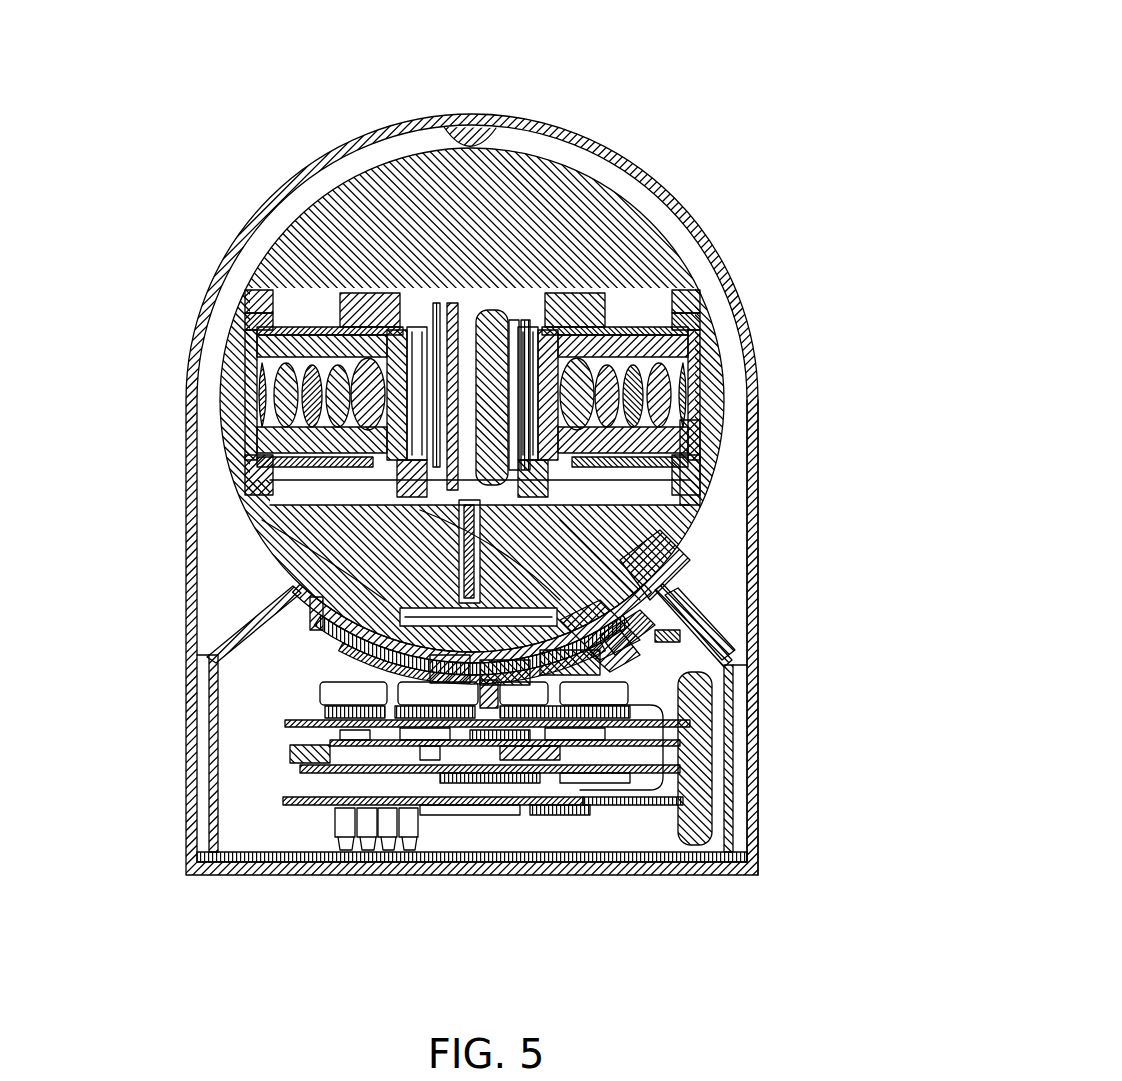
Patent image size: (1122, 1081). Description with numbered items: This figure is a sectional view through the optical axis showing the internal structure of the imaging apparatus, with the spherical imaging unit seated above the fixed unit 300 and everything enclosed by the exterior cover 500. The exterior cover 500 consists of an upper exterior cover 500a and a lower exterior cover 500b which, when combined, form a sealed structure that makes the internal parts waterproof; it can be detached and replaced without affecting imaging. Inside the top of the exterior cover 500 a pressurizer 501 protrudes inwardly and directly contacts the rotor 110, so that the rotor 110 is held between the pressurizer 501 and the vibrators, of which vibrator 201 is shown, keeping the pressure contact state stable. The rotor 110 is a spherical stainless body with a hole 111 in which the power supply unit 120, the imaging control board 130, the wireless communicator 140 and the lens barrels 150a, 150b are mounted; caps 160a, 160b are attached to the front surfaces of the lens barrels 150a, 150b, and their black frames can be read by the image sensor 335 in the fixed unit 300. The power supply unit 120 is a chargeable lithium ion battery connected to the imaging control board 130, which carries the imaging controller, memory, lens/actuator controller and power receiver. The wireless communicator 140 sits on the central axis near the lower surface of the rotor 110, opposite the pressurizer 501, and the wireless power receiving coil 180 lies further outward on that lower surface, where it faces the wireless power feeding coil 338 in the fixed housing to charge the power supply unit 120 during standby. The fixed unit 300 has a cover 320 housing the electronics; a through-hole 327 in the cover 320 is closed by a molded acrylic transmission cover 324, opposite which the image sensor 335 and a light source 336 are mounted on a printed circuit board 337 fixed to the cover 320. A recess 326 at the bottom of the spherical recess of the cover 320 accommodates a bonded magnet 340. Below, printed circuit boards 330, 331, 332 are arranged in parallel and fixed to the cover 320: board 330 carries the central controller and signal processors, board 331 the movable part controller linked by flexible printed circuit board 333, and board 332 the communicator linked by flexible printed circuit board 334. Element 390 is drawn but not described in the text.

The rotor 110 is at (352, 190).
The hole 111 is at (600, 322).
The power supply unit 120 is at (549, 300).
The imaging control board 130 is at (449, 305).
The wireless communicator 140 is at (377, 518).
The lens barrel 150a is at (283, 225).
The lens barrel 150b is at (740, 282).
The cap 160a is at (258, 268).
The cap 160b is at (685, 228).
The wireless power receiving coil 180 is at (395, 652).
The vibrator 201 is at (685, 555).
The fixed unit 300 is at (733, 735).
The cover 320 is at (290, 595).
The transmission cover 324 is at (690, 600).
The recess 326 is at (703, 580).
The hole 327 is at (665, 640).
The printed circuit board 330 is at (300, 765).
The printed circuit board 331 is at (290, 724).
The printed circuit board 332 is at (300, 812).
The flexible printed circuit board 333 is at (662, 747).
The flexible printed circuit board 334 is at (285, 800).
The image sensor 335 is at (715, 686).
The light source 336 is at (705, 643).
The printed circuit board 337 is at (700, 640).
The wireless power feeding coil 338 is at (340, 660).
The magnet 340 is at (700, 470).
The battery 390 is at (712, 818).
The exterior cover 500 is at (777, 876).
The upper exterior cover 500a is at (758, 490).
The lower exterior cover 500b is at (660, 873).
The pressurizer 501 is at (470, 120).